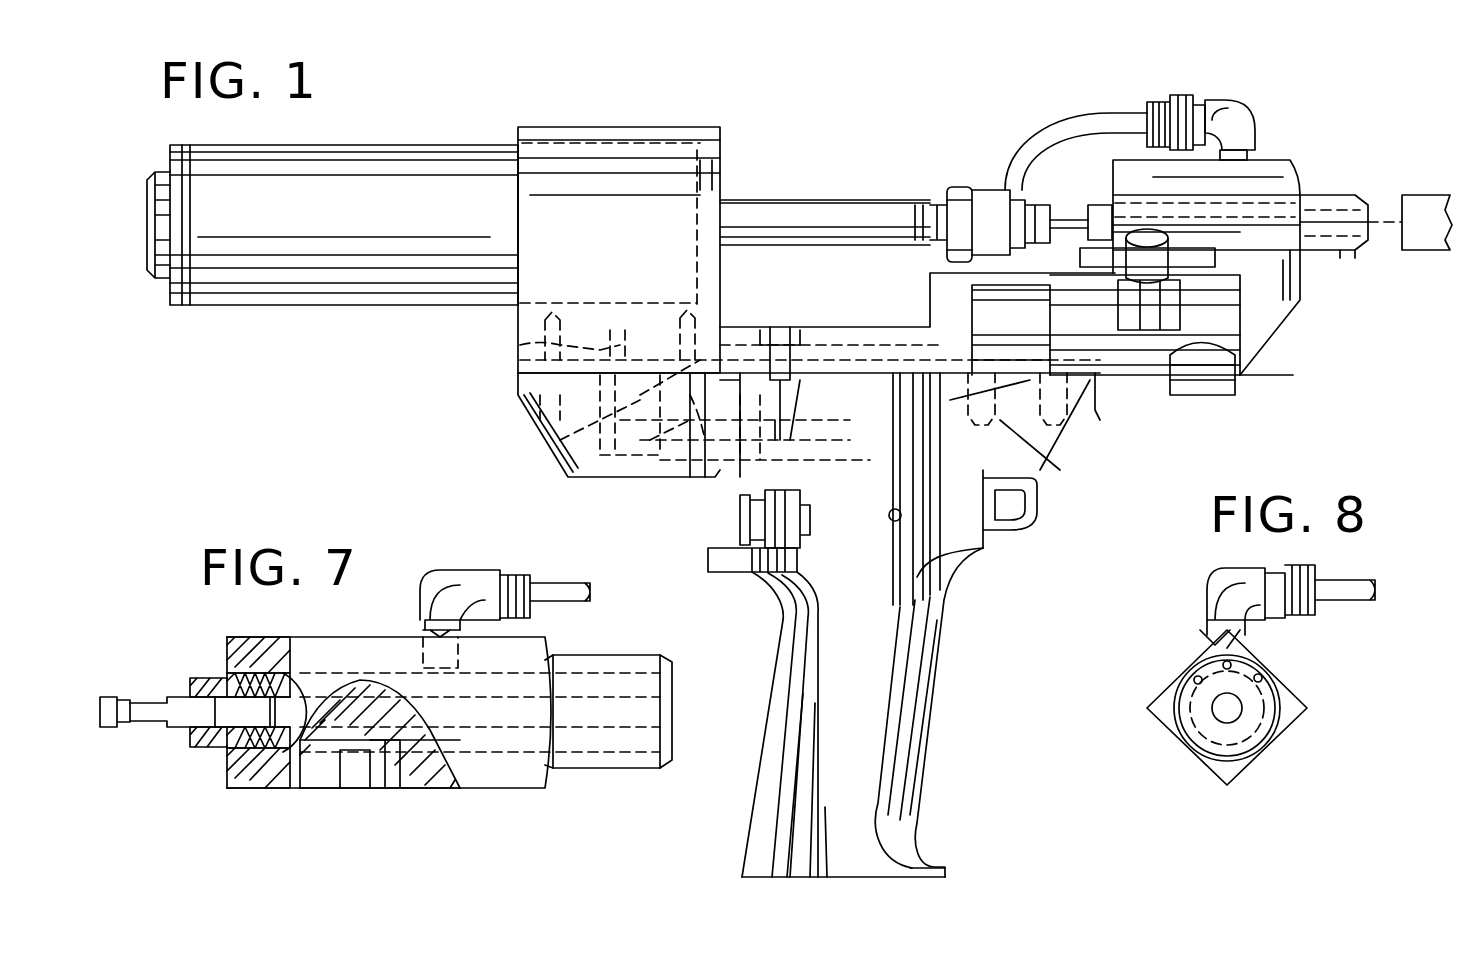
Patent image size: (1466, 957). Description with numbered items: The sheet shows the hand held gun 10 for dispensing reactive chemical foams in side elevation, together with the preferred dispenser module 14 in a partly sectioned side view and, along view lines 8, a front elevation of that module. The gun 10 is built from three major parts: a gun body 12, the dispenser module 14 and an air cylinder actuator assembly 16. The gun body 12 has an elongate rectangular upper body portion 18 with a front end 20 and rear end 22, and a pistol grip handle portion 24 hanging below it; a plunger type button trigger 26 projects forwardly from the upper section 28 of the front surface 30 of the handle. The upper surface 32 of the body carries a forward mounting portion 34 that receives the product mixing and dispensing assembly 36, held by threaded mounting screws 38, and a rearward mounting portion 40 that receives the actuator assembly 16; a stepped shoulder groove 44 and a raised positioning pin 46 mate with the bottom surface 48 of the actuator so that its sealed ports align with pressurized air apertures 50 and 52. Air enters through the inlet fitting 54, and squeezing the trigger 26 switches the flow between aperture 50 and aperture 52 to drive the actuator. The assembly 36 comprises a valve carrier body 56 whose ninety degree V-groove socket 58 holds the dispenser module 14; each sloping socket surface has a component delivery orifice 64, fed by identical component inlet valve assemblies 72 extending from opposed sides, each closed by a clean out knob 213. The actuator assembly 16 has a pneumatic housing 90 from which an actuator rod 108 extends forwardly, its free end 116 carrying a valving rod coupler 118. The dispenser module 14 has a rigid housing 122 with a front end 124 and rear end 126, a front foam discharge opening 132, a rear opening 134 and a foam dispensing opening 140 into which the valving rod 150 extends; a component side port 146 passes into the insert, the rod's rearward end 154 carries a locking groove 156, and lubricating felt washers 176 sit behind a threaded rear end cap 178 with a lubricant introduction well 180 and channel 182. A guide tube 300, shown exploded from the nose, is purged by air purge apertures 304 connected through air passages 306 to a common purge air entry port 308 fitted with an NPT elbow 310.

In FIG. 1, the hand held foam dispensing gun 10 is at (946, 138).
In FIG. 1, the gun body 12 is at (1030, 478).
In FIG. 1, the dispenser module 14 is at (1270, 170).
In FIG. 1, the air cylinder actuator assembly 16 is at (485, 178).
In FIG. 1, the upper body portion 18 is at (750, 480).
In FIG. 1, the front end 20 is at (1100, 397).
In FIG. 1, the rear end 22 is at (520, 378).
In FIG. 1, the pistol grip handle portion 24 is at (870, 745).
In FIG. 1, the button trigger 26 is at (1040, 518).
In FIG. 1, the upper section 28 is at (960, 560).
In FIG. 1, the front surface 30 is at (940, 625).
In FIG. 1, the upper surface 32 is at (870, 375).
In FIG. 1, the forward mounting portion 34 is at (1020, 420).
In FIG. 1, the product mixing and dispensing assembly 36 is at (1250, 92).
In FIG. 1, the threaded mounting screws 38 is at (975, 436).
In FIG. 1, the rearward mounting portion 40 is at (560, 432).
In FIG. 1, the downwardly stepped shoulder groove 44 is at (522, 398).
In FIG. 1, the raised positioning pin 46 is at (535, 323).
In FIG. 1, the bottom surface 48 is at (515, 362).
In FIG. 1, the pressurized air aperture 50 is at (580, 450).
In FIG. 1, the pressurized air aperture 52 is at (535, 424).
In FIG. 1, the pressurized air inlet fitting 54 is at (745, 522).
In FIG. 1, the valve carrier body 56 is at (1250, 345).
In FIG. 1, the socket 58 is at (1310, 278).
In FIG. 1, the component delivery orifice 64 is at (1240, 298).
In FIG. 1, the component inlet valve assembly 72 is at (1210, 320).
In FIG. 1, the pneumatic housing 90 is at (375, 150).
In FIG. 1, the actuator rod 108 is at (770, 215).
In FIG. 1, the free end 116 is at (935, 200).
In FIG. 1, the valving rod coupler 118 is at (985, 195).
In FIG. 1, the rigid housing 122 is at (1292, 182).
In FIG. 7, the rigid housing 122 is at (243, 645).
In FIG. 1, the front end 124 is at (1355, 252).
In FIG. 1, the rear end 126 is at (1108, 175).
In FIG. 7, the rear end 126 is at (225, 652).
In FIG. 1, the front foam discharge opening 132 is at (1370, 215).
In FIG. 1, the rear opening 134 is at (1095, 205).
In FIG. 7, the foam dispensing opening 140 is at (672, 720).
In FIG. 7, the component side port 146 is at (415, 780).
In FIG. 7, the valving rod 150 is at (280, 712).
In FIG. 7, the rearward end 154 is at (130, 700).
In FIG. 7, the locking groove 156 is at (130, 722).
In FIG. 7, the lubricating felt washer 176 is at (260, 770).
In FIG. 7, the threaded rear end cap 178 is at (195, 684).
In FIG. 7, the lubricant introduction well 180 is at (215, 683).
In FIG. 7, the lubricant introduction channel 182 is at (215, 745).
In FIG. 1, the clean out knob 213 is at (1215, 395).
In FIG. 1, the guide tube 300 is at (1410, 195).
In FIG. 7, the air purge aperture 304 is at (680, 662).
In FIG. 8, the air purge aperture 304 is at (1268, 675).
In FIG. 7, the air passage 306 is at (583, 655).
In FIG. 7, the purge air entry port 308 is at (458, 635).
In FIG. 7, the NPT elbow 310 is at (430, 593).
In FIG. 8, the NPT elbow 310 is at (1215, 577).
In FIG. 7, the view lines 8— 8 is at (655, 803).